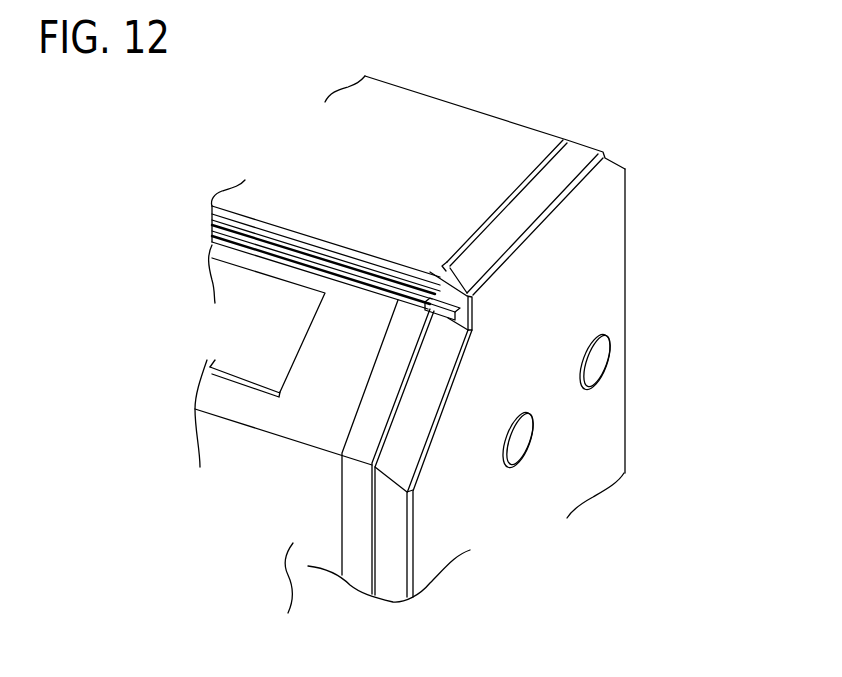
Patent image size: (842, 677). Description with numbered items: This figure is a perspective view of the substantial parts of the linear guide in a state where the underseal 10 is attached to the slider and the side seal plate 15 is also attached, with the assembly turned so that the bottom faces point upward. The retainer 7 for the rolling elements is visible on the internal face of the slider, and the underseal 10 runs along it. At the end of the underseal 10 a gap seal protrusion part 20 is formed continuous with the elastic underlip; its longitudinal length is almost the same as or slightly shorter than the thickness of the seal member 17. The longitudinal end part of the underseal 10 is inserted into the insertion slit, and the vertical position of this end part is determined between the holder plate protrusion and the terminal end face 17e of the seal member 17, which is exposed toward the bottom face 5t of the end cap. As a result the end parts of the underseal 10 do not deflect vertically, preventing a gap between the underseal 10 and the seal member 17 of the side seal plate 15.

The bottom face of end cap 5t is at (457, 155).
The retainer 7 is at (283, 409).
The underseal 10 is at (402, 322).
The side seal plate 15 is at (585, 257).
The seal member 17 is at (418, 420).
The terminal end face of seal member 17e is at (463, 295).
The gap seal protrusion part 20 is at (438, 300).